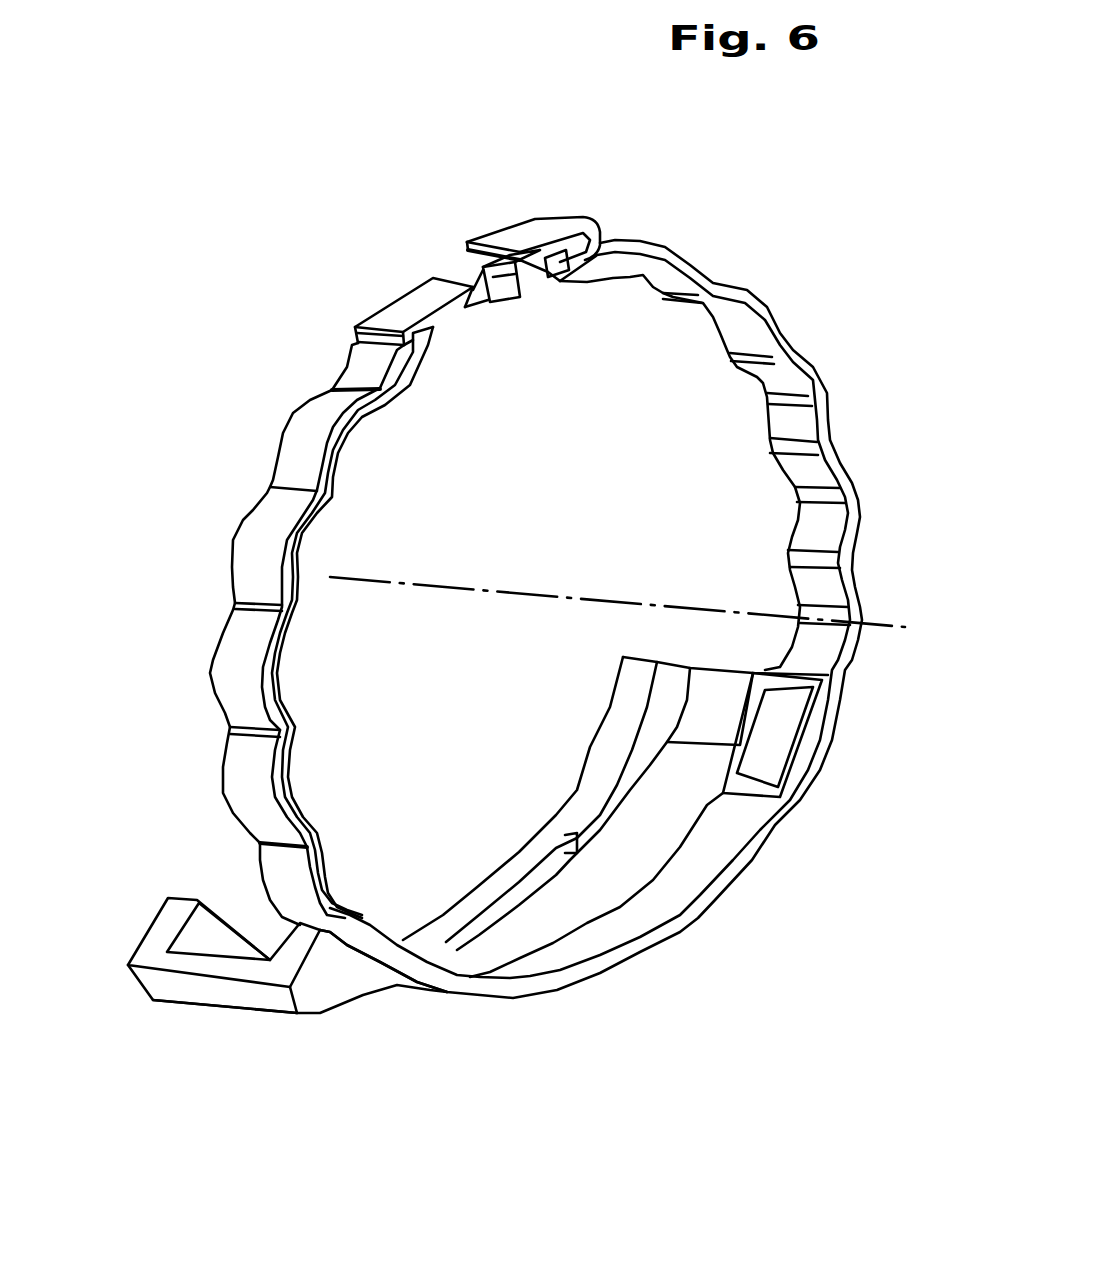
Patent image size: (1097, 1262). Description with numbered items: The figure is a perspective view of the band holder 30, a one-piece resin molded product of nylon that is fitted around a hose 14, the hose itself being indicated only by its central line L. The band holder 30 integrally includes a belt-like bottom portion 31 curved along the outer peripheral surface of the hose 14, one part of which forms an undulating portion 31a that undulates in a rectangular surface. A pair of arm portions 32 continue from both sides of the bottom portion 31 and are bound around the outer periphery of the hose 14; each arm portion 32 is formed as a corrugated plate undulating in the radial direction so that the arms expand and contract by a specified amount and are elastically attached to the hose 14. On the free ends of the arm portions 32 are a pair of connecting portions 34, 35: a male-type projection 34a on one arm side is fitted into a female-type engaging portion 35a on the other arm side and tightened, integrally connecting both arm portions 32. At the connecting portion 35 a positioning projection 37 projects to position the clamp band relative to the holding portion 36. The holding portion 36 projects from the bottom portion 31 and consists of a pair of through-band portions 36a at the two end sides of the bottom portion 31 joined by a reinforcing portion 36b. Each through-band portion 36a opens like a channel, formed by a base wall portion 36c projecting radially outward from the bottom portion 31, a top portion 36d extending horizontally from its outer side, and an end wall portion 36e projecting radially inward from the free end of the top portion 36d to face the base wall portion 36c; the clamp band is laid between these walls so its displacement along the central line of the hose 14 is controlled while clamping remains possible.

The hose 14 is at (486, 583).
The band holder 30 is at (598, 604).
The bottom portion 31 is at (705, 903).
The undulating portion 31a is at (777, 748).
The arm portions 32 is at (832, 418).
The connecting portion 34 is at (366, 297).
The male-type projection 34a is at (463, 307).
The connecting portion 35 is at (494, 214).
The female-type engaging portion 35a is at (558, 283).
The holding portion 36 is at (482, 885).
The through-band portions 36a is at (595, 692).
The reinforcing portion 36b is at (494, 883).
The base wall portion 36c is at (343, 987).
The top portion 36d is at (240, 998).
The end wall portion 36e is at (160, 908).
The positioning projection 37 is at (480, 268).